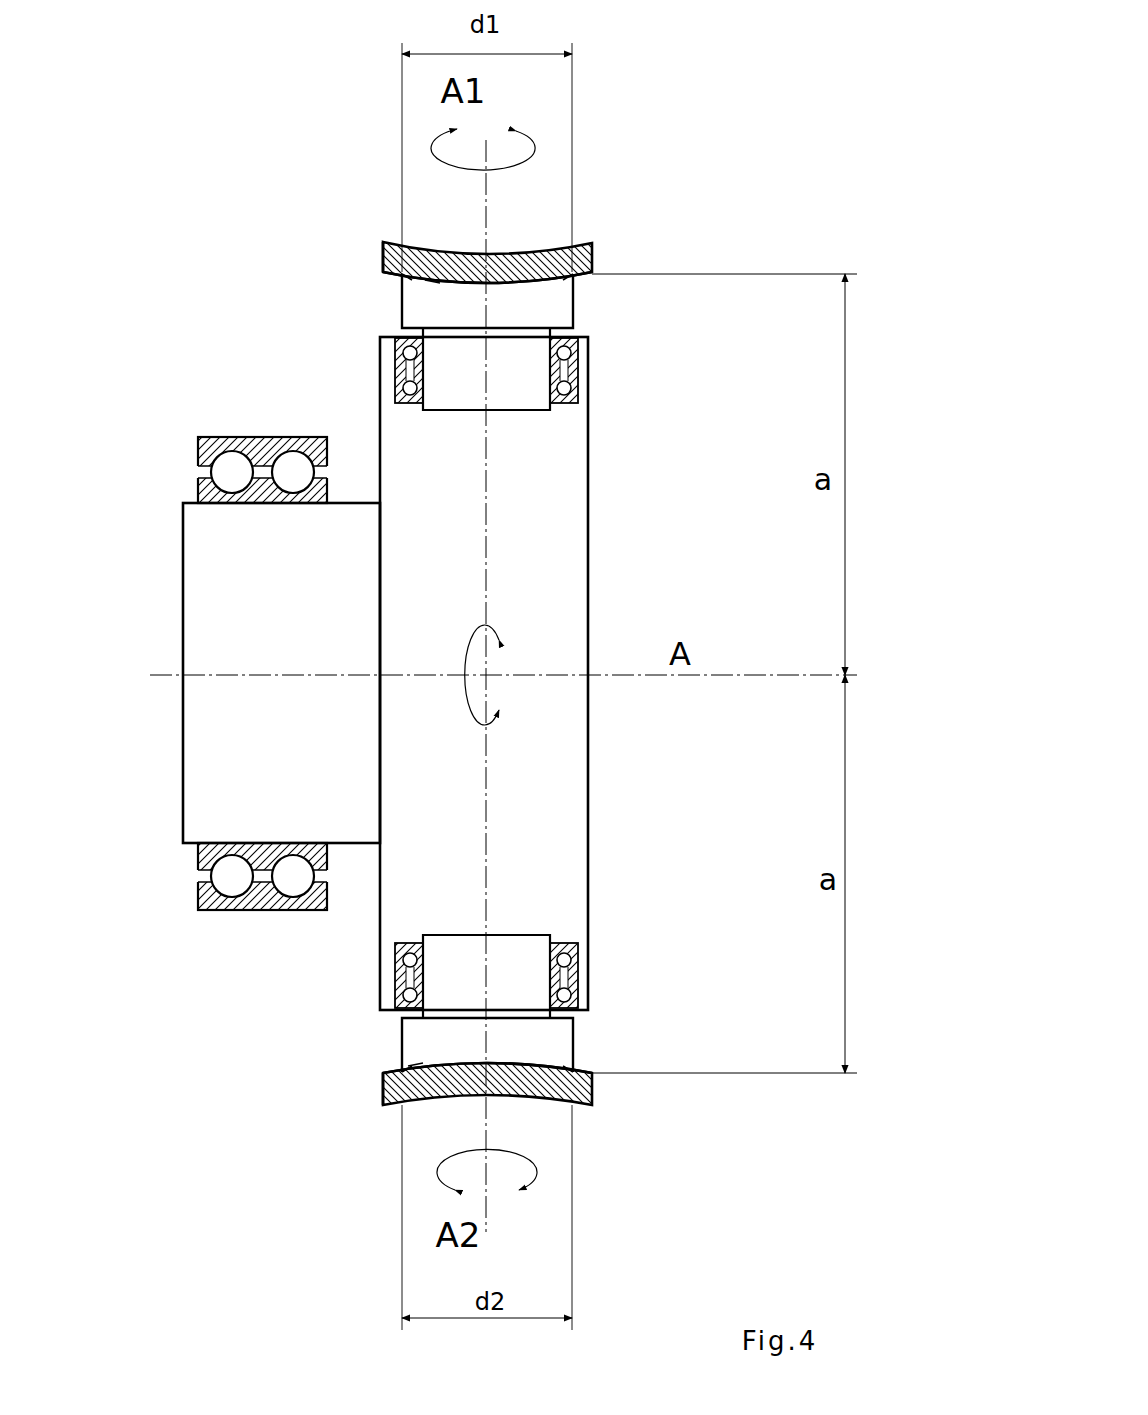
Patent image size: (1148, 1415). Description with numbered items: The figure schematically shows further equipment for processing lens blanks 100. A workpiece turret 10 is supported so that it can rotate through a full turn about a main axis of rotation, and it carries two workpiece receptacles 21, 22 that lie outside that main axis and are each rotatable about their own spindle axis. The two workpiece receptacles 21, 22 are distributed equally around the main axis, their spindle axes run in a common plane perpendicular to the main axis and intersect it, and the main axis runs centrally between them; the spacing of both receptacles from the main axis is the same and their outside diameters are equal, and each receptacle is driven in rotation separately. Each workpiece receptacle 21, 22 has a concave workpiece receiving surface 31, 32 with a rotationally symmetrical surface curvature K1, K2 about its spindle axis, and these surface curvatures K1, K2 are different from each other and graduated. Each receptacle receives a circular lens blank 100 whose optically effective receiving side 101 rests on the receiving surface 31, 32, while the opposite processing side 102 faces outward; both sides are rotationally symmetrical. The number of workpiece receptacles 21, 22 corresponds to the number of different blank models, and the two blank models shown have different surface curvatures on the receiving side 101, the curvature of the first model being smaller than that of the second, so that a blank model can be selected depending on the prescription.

The workpiece turret 10 is at (540, 597).
The workpiece receptacle 21 is at (445, 373).
The workpiece receptacle 22 is at (437, 978).
The workpiece receiving surface 31 is at (560, 301).
The workpiece receiving surface 32 is at (568, 1037).
The lens blank 100 is at (552, 255).
The receiving side 101 is at (383, 273).
The processing side 102 is at (405, 238).
The surface curvature K1 is at (430, 282).
The surface curvature K2 is at (413, 1063).